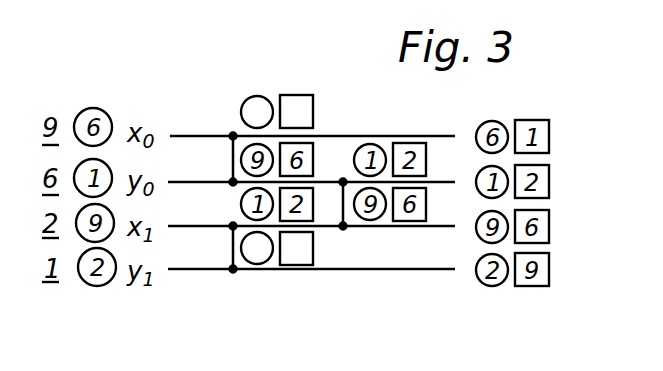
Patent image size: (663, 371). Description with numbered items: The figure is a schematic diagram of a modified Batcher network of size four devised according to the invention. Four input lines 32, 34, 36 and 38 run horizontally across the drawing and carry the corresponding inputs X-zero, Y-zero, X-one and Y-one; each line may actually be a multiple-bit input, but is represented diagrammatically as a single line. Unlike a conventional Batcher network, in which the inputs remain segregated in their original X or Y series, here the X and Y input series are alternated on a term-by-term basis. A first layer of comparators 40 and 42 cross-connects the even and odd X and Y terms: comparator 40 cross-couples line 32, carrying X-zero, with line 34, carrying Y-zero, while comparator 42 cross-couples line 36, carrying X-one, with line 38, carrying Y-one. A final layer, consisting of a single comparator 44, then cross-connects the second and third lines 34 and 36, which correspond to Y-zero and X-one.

The input line 32 is at (205, 135).
The input line 34 is at (208, 180).
The input line 36 is at (216, 225).
The input line 38 is at (192, 270).
The comparator 40 is at (236, 146).
The comparator 42 is at (231, 249).
The comparator 44 is at (342, 197).